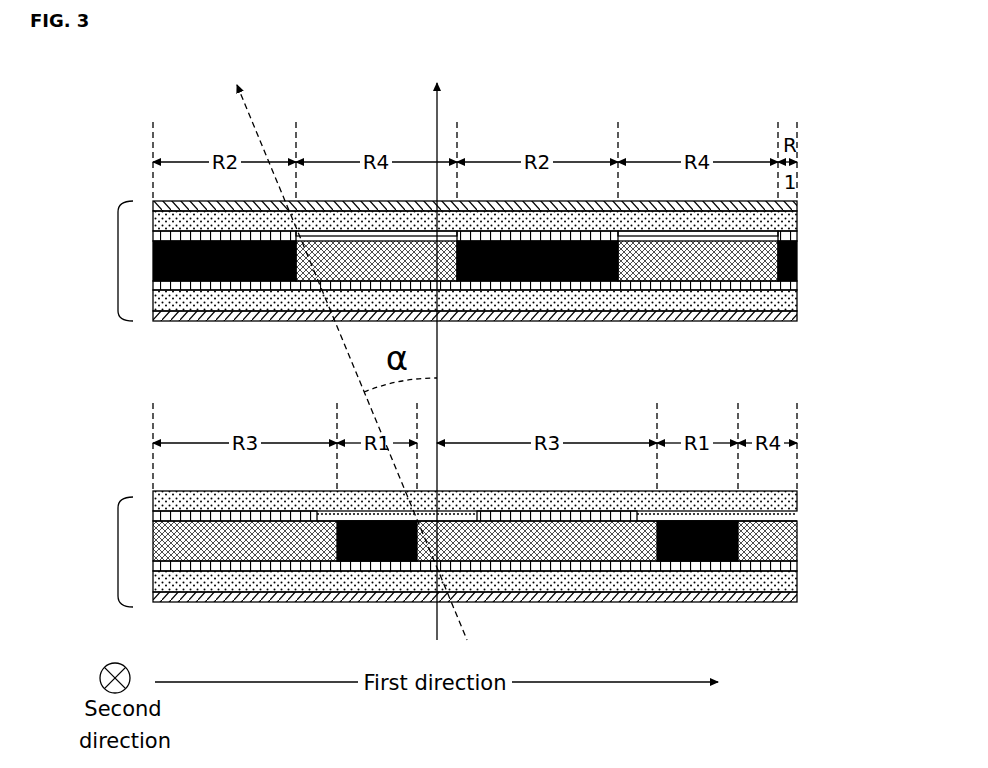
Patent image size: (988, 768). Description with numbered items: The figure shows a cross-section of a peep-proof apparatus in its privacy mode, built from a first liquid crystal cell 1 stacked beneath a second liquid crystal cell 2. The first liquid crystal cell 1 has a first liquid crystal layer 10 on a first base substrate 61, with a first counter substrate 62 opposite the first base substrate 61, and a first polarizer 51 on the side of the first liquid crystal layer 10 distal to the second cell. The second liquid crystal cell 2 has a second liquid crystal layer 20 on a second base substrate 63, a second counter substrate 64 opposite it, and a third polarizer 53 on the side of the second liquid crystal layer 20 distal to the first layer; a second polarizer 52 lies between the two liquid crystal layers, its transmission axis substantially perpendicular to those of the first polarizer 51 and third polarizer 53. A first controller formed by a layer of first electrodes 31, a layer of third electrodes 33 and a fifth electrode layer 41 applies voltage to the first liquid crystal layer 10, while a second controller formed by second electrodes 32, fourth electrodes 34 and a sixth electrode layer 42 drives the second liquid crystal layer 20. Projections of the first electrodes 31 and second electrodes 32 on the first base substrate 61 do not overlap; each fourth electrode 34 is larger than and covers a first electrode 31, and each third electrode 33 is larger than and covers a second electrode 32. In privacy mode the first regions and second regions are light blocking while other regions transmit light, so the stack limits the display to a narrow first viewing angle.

The first liquid crystal cell 1 is at (118, 552).
The second liquid crystal cell 2 is at (118, 262).
The first liquid crystal layer 10 is at (797, 532).
The second liquid crystal layer 20 is at (797, 261).
The first electrodes 31 is at (233, 515).
The second electrodes 32 is at (222, 237).
The third electrodes 33 is at (397, 517).
The fourth electrodes 34 is at (375, 233).
The fifth electrode layer 41 is at (797, 566).
The sixth electrode layer 42 is at (797, 286).
The first polarizer 51 is at (797, 600).
The second polarizer 52 is at (797, 318).
The third polarizer 53 is at (797, 203).
The first base substrate 61 is at (797, 580).
The first counter substrate 62 is at (797, 500).
The second base substrate 63 is at (797, 302).
The second counter substrate 64 is at (797, 222).